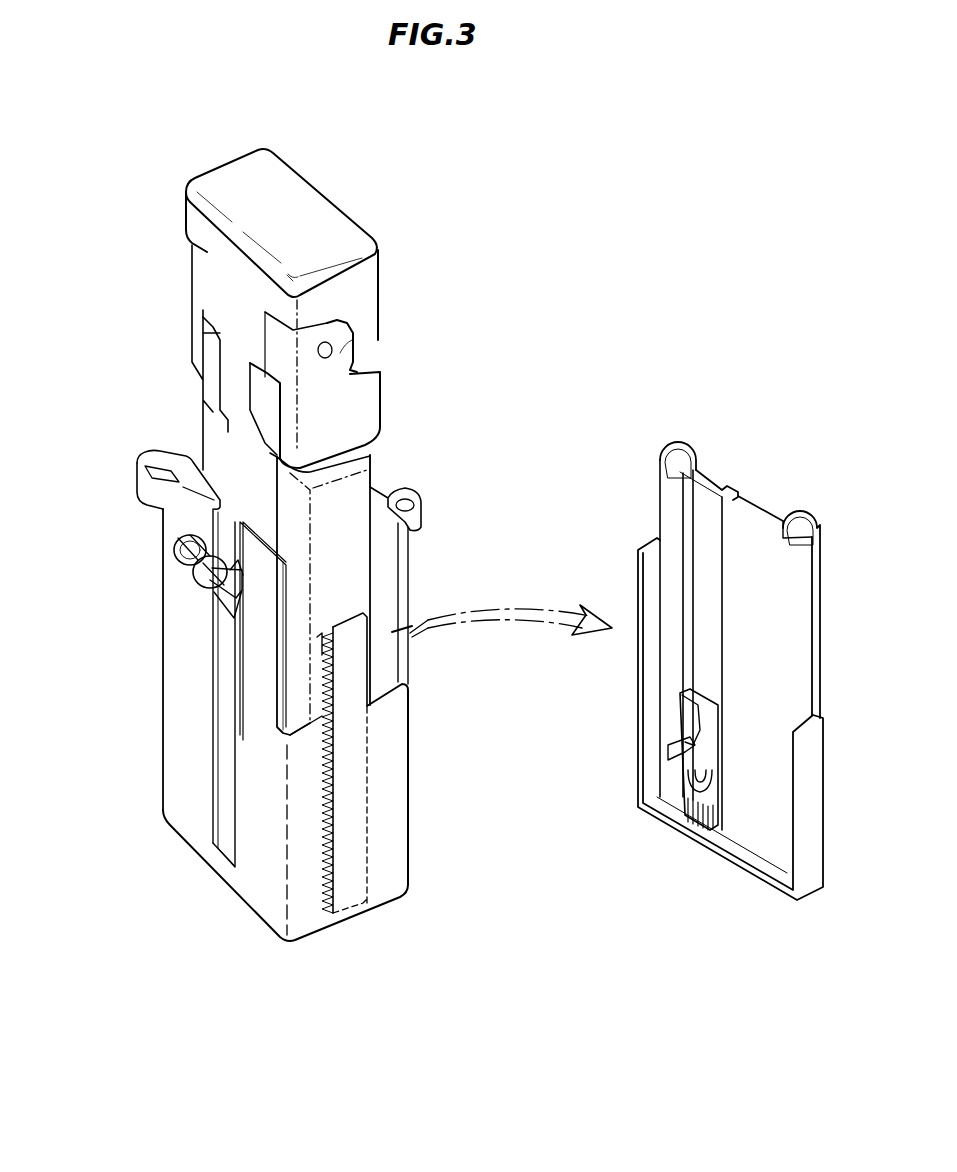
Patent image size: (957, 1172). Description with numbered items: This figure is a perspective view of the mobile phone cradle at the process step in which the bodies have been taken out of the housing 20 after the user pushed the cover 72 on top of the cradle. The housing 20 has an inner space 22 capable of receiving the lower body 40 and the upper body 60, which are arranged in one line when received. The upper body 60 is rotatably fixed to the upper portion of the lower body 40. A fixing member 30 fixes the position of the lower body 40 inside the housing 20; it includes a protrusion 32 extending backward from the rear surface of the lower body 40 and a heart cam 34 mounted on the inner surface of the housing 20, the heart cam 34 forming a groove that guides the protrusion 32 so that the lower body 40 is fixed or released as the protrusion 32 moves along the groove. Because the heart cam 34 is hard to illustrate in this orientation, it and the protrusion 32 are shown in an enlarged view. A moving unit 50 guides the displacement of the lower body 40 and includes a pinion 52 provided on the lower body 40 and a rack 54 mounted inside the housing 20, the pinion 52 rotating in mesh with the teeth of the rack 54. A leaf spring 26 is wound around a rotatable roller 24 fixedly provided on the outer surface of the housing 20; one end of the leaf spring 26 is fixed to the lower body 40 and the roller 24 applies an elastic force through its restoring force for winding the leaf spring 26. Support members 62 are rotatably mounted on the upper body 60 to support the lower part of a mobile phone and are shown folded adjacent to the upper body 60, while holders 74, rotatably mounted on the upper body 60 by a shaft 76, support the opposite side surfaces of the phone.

The housing 20 is at (390, 819).
The inner space 22 is at (222, 804).
The roller 24 is at (183, 552).
The leaf spring 26 is at (220, 606).
The fixing member 30 is at (677, 671).
The protrusion 32 is at (687, 743).
The heart cam 34 is at (692, 784).
The lower body 40 is at (343, 563).
The moving unit 50 is at (204, 763).
The pinion 52 is at (320, 659).
The rack 54 is at (347, 683).
The upper body 60 is at (222, 290).
The support members 62 is at (290, 417).
The cover 72 is at (297, 210).
The holders 74 is at (212, 388).
The shaft 76 is at (340, 351).